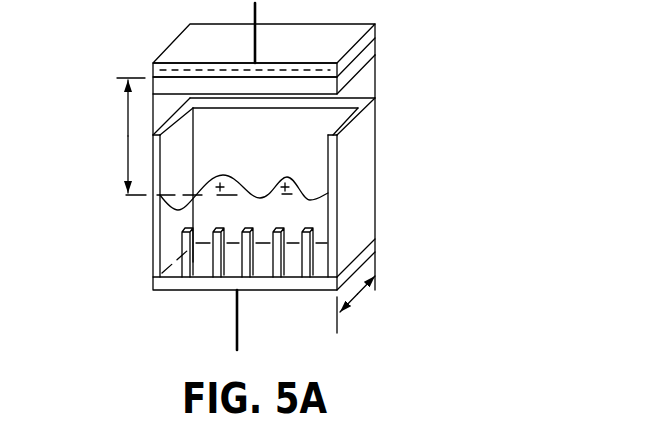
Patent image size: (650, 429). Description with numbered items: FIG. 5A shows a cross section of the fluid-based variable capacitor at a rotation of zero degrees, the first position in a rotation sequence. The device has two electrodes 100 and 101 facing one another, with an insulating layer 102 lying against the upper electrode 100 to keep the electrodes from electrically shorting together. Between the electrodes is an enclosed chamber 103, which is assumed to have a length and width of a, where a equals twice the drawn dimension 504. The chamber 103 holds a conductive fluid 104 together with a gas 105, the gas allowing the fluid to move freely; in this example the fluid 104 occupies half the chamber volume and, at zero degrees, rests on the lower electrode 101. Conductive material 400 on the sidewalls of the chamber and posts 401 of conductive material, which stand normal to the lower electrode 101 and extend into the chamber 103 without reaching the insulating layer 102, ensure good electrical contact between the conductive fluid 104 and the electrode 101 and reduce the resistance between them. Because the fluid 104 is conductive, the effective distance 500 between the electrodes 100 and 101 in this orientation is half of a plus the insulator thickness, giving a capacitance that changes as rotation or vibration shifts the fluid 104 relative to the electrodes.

The electrode 100 is at (377, 33).
The electrode 101 is at (360, 257).
The insulating layer 102 is at (377, 52).
The enclosed chamber 103 is at (152, 235).
The conductive fluid 104 is at (247, 238).
The gas 105 is at (244, 169).
The conductive sidewalls 400 is at (348, 125).
The posts 401 is at (320, 238).
The effective distance 500 is at (137, 136).
The half chamber width 504 is at (360, 309).